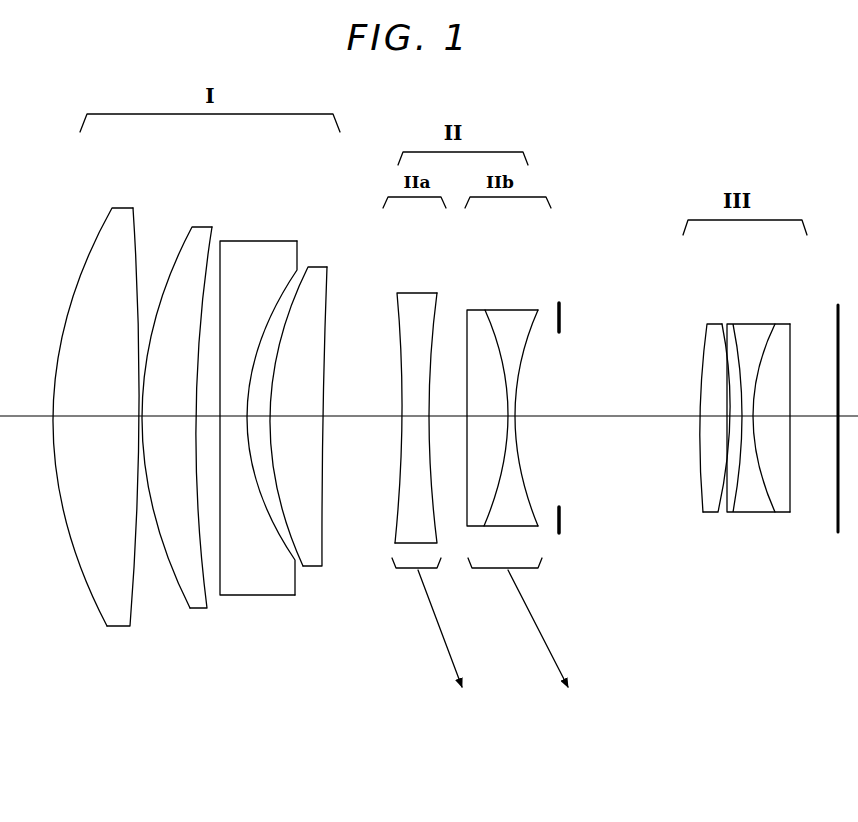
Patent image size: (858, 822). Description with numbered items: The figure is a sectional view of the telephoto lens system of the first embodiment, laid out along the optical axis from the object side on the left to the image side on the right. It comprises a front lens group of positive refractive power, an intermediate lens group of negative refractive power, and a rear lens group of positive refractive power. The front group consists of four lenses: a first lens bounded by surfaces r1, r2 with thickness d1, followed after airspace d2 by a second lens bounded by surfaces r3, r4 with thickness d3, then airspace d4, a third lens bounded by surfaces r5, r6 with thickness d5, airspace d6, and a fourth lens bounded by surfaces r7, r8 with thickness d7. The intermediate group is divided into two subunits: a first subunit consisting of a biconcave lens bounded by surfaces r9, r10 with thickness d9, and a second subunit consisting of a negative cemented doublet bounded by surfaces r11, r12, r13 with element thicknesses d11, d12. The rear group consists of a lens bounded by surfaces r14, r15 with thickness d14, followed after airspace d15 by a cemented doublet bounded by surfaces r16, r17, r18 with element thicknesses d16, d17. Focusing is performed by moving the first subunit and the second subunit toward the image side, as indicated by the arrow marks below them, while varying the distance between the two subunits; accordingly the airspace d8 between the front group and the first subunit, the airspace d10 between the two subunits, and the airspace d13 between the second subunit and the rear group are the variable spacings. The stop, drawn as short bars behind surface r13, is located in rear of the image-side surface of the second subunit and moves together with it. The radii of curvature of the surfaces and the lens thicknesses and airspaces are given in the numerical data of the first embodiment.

The radius of curvature of first lens surface r1 is at (100, 228).
The radius of curvature of second lens surface r2 is at (122, 208).
The radius of curvature of third lens surface r3 is at (183, 243).
The radius of curvature of fourth lens surface r4 is at (213, 238).
The radius of curvature of fifth lens surface r5 is at (222, 252).
The radius of curvature of sixth lens surface r6 is at (283, 282).
The radius of curvature of seventh lens surface r7 is at (304, 283).
The radius of curvature of eighth lens surface r8 is at (327, 280).
The radius of curvature of ninth lens surface r9 is at (397, 303).
The radius of curvature of tenth lens surface r10 is at (436, 304).
The radius of curvature of eleventh lens surface r11 is at (468, 325).
The radius of curvature of twelfth lens surface r12 is at (502, 325).
The radius of curvature of thirteenth lens surface r13 is at (538, 320).
The radius of curvature of fourteenth lens surface r14 is at (700, 343).
The radius of curvature of fifteenth lens surface r15 is at (721, 333).
The radius of curvature of sixteenth lens surface r16 is at (736, 332).
The radius of curvature of seventeenth lens surface r17 is at (766, 335).
The radius of curvature of eighteenth lens surface r18 is at (790, 340).
The thickness of first lens d1 is at (82, 418).
The airspace between first and second lenses d2 is at (138, 415).
The thickness of second lens d3 is at (165, 418).
The airspace between second and third lenses d4 is at (207, 417).
The thickness of third lens d5 is at (233, 418).
The airspace between third and fourth lenses d6 is at (258, 417).
The thickness of fourth lens d7 is at (303, 418).
The variable airspace between front lens group and first subunit d8 is at (365, 418).
The thickness of biconcave lens d9 is at (412, 418).
The variable airspace between first and second subunits d10 is at (447, 418).
The thickness of first element of cemented doublet d11 is at (478, 418).
The thickness of second element of cemented doublet d12 is at (510, 418).
The variable airspace between second subunit and rear lens group d13 is at (603, 418).
The thickness of first lens of rear group d14 is at (708, 418).
The airspace in rear lens group d15 is at (737, 414).
The thickness of first element of rear doublet d16 is at (750, 416).
The thickness of second element of rear doublet d17 is at (768, 418).